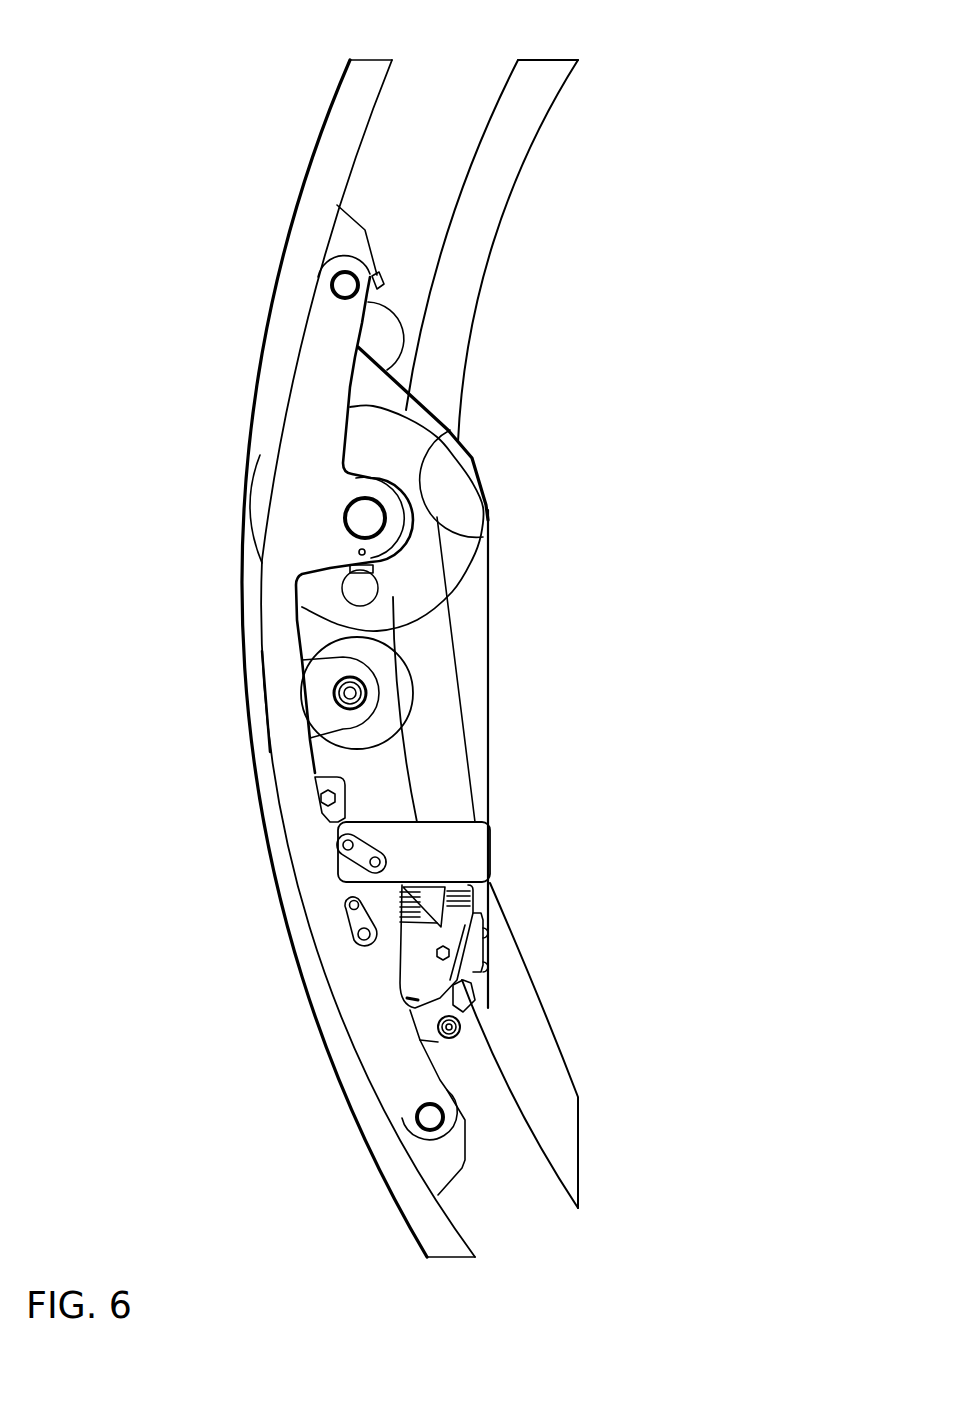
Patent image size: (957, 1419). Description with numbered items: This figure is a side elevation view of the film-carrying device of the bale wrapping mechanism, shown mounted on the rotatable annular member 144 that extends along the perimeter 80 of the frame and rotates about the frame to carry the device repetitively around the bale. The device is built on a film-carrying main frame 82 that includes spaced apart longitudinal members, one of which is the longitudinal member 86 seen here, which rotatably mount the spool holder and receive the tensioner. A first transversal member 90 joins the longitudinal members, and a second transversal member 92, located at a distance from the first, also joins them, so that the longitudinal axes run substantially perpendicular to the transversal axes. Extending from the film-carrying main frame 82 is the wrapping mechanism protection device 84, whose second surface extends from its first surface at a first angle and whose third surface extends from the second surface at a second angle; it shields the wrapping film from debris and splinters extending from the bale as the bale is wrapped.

The perimeter 80 is at (340, 638).
The film-carrying main frame 82 is at (298, 128).
The wrapping mechanism protection device 84 is at (505, 562).
The longitudinal member 86 is at (316, 385).
The first transversal member 90 is at (340, 287).
The second transversal member 92 is at (430, 1117).
The rotatable annular member 144 is at (310, 222).